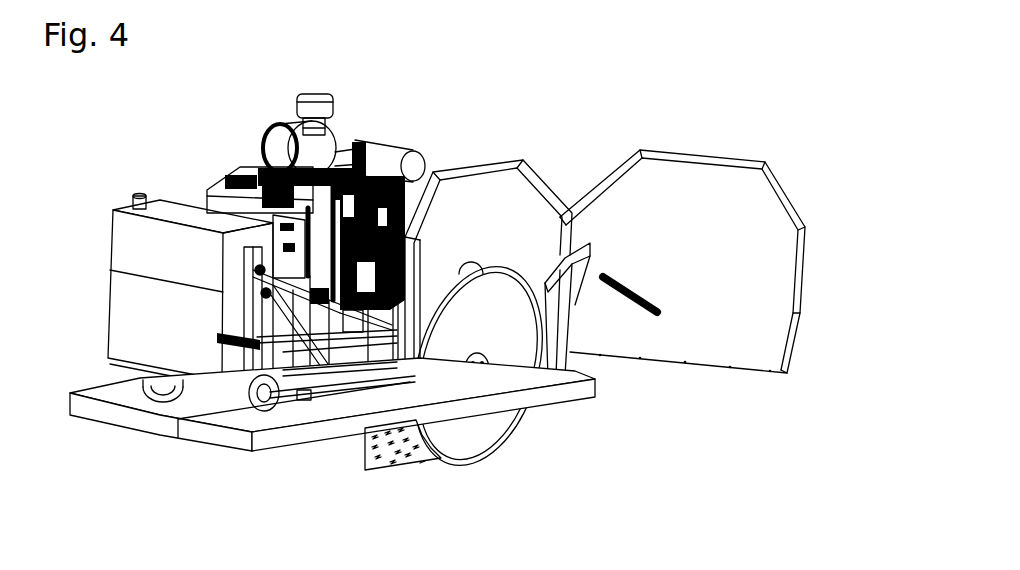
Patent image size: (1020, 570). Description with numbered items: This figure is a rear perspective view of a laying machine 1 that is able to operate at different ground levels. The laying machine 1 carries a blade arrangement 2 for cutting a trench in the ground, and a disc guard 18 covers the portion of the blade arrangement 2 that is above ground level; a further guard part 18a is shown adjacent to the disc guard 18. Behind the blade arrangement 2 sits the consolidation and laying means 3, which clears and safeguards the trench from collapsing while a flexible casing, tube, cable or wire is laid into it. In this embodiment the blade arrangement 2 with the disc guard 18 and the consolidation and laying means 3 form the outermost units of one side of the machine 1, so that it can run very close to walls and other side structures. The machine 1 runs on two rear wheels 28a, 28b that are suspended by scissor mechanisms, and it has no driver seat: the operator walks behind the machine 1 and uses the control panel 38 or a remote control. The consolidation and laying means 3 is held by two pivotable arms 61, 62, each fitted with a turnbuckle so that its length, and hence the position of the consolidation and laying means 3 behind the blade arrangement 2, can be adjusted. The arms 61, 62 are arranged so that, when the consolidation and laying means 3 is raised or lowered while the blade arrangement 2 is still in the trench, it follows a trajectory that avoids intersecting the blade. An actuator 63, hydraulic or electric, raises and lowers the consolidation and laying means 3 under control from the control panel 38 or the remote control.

The laying machine 1 is at (575, 128).
The blade arrangement 2 is at (493, 428).
The consolidation and laying means 3 is at (401, 488).
The disc guard 18 is at (457, 203).
The blade guard opening half 18a is at (713, 203).
The rear wheel 28a is at (155, 388).
The rear wheel 28b is at (255, 413).
The control panel 38 is at (237, 192).
The pivotable arm 61 is at (338, 392).
The pivotable arm 62 is at (300, 407).
The actuator 63 is at (307, 398).